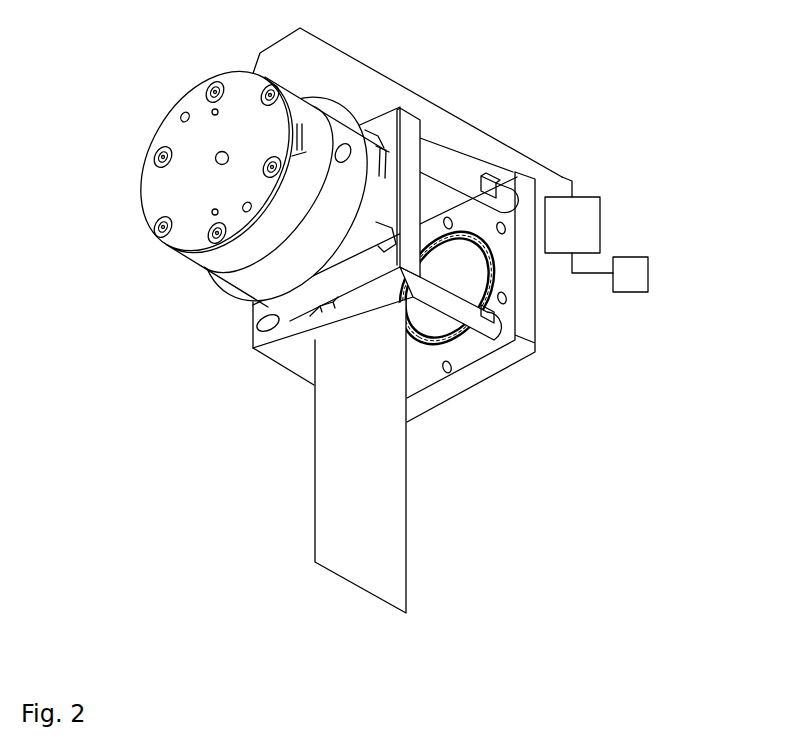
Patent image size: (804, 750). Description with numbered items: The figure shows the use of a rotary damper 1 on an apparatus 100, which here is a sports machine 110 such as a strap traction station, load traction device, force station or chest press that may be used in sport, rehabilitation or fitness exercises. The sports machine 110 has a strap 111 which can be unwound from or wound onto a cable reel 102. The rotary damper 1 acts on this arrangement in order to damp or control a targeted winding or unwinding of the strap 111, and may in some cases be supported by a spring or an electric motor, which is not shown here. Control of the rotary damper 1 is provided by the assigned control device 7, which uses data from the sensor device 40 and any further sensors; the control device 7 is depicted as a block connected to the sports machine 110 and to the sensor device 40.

The apparatus 100 is at (214, 217).
The rotary damper 1 is at (210, 270).
The cable reel 102 is at (443, 262).
The sports machine 110 is at (616, 137).
The strap 111 is at (338, 488).
The control device 7 is at (590, 215).
The sensor device 40 is at (633, 270).